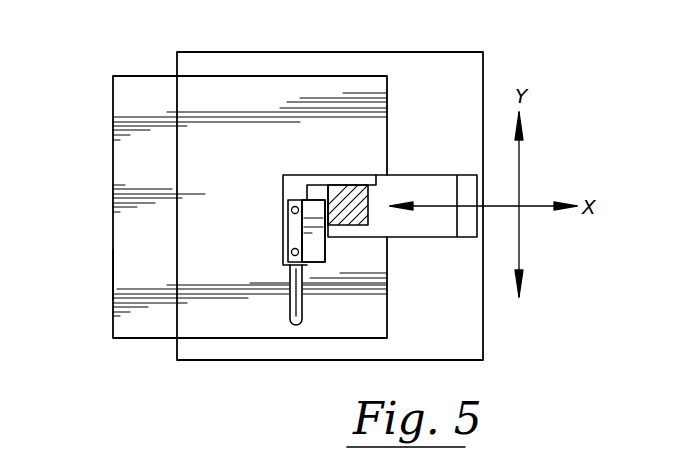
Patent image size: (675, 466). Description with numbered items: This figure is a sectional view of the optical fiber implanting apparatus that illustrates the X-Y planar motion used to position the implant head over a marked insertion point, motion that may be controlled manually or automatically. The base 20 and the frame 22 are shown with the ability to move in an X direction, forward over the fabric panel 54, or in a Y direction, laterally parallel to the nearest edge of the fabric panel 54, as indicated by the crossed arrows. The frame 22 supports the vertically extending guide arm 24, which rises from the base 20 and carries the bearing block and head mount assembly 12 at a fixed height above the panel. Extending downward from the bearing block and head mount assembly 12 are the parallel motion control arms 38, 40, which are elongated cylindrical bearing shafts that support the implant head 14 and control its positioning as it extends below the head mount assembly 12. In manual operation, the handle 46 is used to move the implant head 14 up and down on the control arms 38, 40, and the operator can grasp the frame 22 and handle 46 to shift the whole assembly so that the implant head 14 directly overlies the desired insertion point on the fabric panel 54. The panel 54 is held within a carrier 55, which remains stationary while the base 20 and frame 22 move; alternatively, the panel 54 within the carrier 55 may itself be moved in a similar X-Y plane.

The base 20 is at (457, 58).
The panel 54 is at (125, 103).
The carrier 55 is at (112, 273).
The frame 22 is at (443, 230).
The bearing block and head mount assembly 12 is at (282, 176).
The guide arm 24 is at (358, 197).
The parallel motion control arm 38 is at (288, 209).
The parallel motion control arm 40 is at (288, 251).
The implant head 14 is at (317, 250).
The handle 46 is at (290, 313).